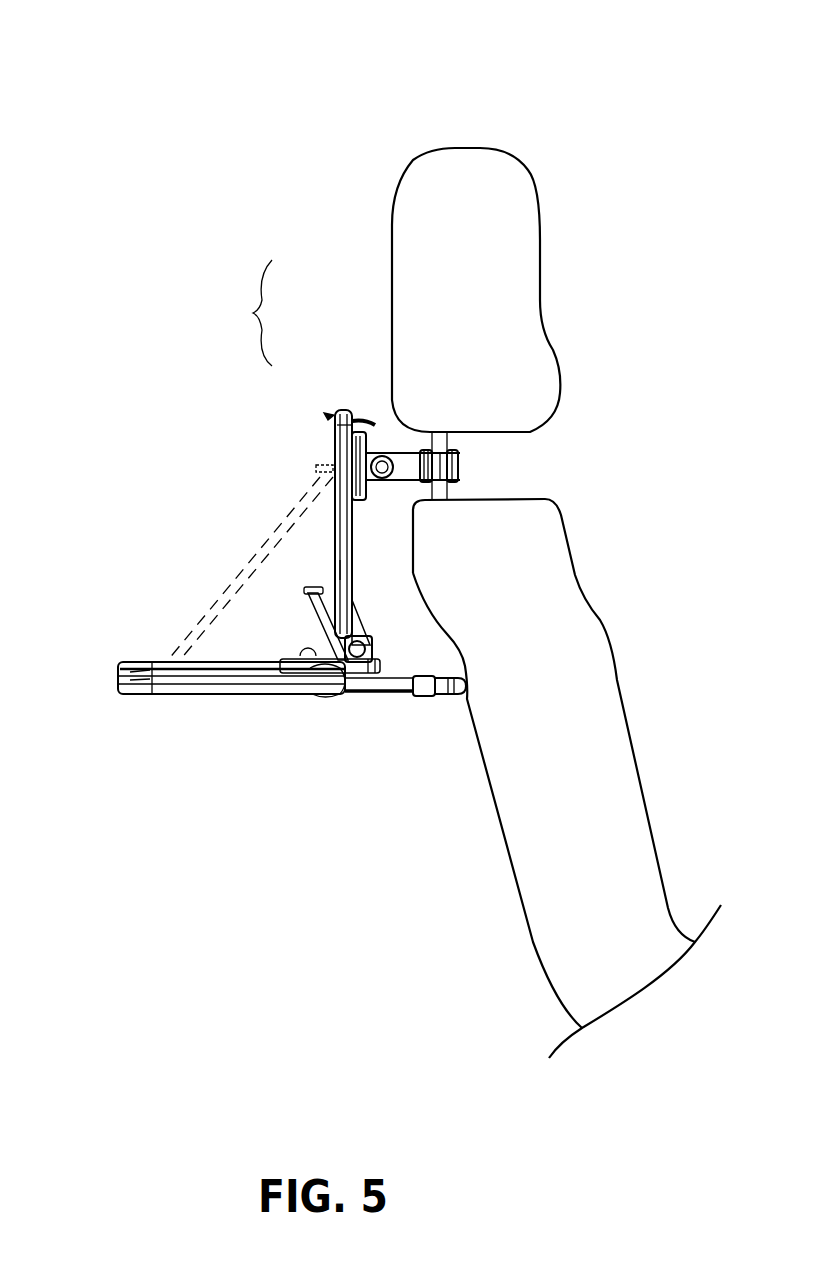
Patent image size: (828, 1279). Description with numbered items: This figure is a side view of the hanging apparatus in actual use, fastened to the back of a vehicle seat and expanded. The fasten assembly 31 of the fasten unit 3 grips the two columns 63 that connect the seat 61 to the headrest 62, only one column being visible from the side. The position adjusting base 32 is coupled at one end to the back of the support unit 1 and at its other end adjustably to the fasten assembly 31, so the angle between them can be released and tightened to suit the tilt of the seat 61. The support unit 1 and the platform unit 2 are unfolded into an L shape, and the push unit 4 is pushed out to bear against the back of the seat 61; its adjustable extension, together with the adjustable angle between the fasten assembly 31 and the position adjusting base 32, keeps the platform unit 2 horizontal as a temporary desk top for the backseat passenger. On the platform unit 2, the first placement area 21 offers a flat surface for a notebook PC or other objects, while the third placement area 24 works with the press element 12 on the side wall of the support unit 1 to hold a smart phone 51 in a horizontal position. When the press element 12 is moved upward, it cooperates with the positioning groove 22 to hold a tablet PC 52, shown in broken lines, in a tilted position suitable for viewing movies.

The support unit 1 is at (340, 512).
The platform unit 2 is at (245, 690).
The fasten unit 3 is at (240, 313).
The push unit 4 is at (448, 700).
The press element 12 is at (316, 468).
The first placement area 21 is at (158, 662).
The positioning groove 22 is at (163, 667).
The third placement area 24 is at (330, 700).
The fasten assembly 31 is at (425, 449).
The position adjusting base 32 is at (420, 442).
The smart phone 51 is at (320, 628).
The tablet PC 52 is at (248, 570).
The seat 61 is at (563, 665).
The headrest 62 is at (430, 182).
The column 63 is at (462, 452).